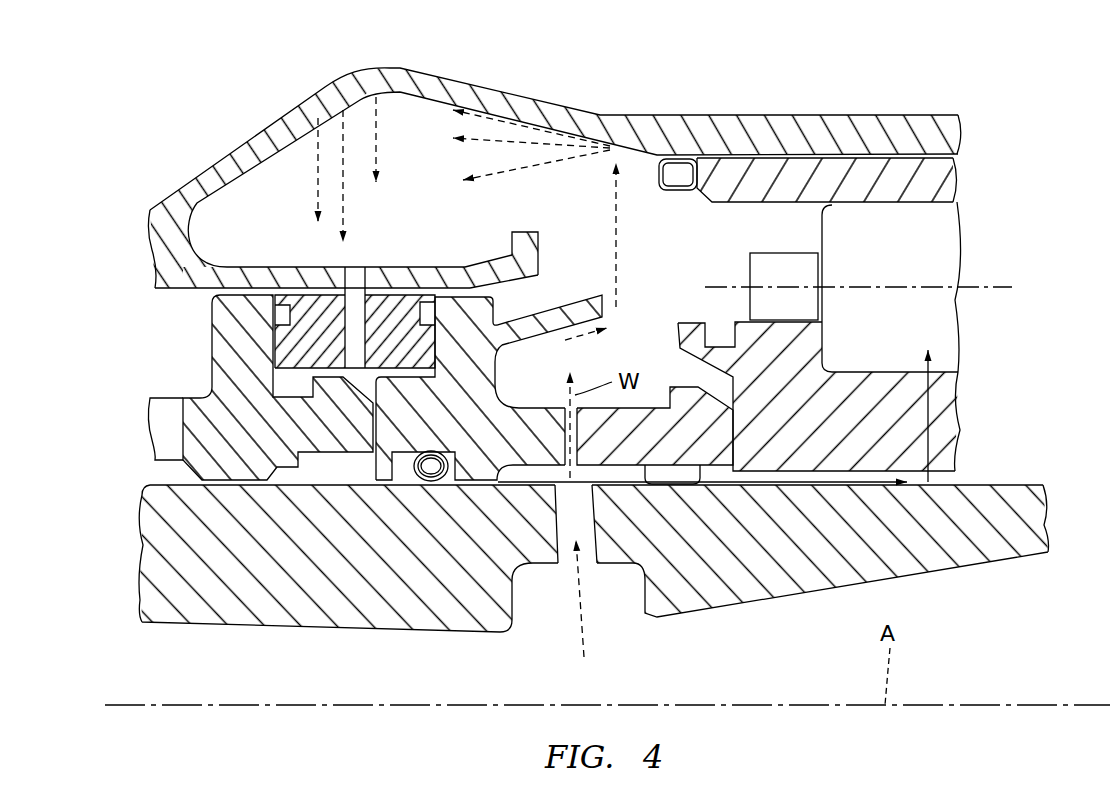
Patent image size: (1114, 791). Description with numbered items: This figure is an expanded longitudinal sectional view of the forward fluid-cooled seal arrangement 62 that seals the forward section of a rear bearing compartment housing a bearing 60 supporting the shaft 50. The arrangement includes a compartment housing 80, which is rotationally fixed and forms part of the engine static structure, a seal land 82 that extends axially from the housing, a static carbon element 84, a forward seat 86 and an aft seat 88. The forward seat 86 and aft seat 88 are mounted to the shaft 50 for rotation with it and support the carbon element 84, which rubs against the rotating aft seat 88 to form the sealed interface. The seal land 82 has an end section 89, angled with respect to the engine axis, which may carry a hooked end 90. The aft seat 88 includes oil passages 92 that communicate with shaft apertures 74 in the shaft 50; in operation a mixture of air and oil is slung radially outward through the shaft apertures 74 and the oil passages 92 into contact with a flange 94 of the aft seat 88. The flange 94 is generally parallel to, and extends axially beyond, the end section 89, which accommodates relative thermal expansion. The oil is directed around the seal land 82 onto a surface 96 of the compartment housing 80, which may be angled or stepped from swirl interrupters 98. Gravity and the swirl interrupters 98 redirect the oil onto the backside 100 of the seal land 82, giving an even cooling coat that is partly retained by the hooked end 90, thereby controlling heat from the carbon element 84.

The outer shaft 50 is at (392, 584).
The bearing 60 is at (1025, 298).
The forward fluid-cooled seal arrangement 62 is at (182, 358).
The shaft apertures 74 is at (597, 524).
The compartment housing 80 is at (259, 134).
The seal land 82 is at (304, 263).
The carbon element 84 is at (332, 352).
The forward seat 86 is at (268, 432).
The aft seat 88 is at (454, 424).
The end section 89 is at (476, 261).
The hooked end 90 is at (530, 236).
The oil passages 92 is at (556, 431).
The flange 94 is at (553, 308).
The surface 96 is at (611, 148).
The swirl interrupters 98 is at (417, 157).
The backside 100 is at (370, 265).